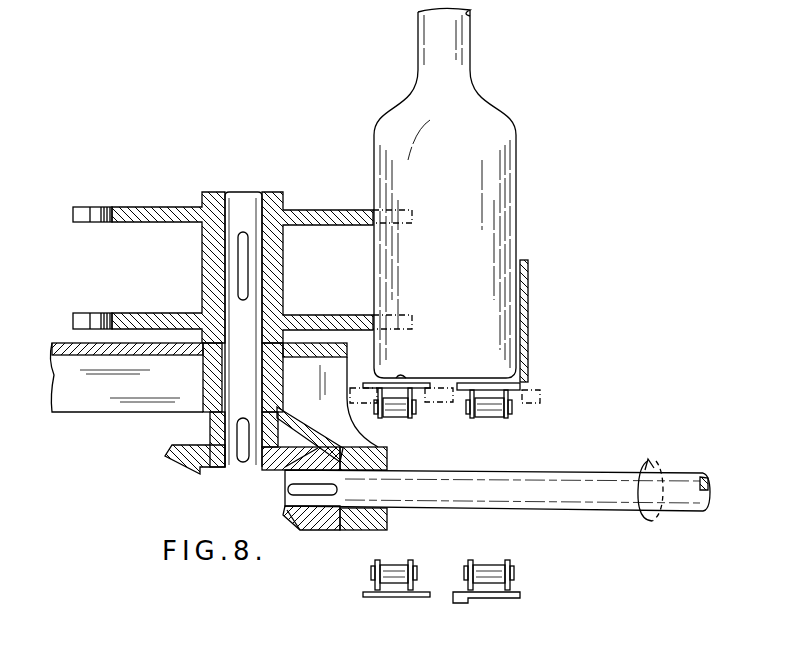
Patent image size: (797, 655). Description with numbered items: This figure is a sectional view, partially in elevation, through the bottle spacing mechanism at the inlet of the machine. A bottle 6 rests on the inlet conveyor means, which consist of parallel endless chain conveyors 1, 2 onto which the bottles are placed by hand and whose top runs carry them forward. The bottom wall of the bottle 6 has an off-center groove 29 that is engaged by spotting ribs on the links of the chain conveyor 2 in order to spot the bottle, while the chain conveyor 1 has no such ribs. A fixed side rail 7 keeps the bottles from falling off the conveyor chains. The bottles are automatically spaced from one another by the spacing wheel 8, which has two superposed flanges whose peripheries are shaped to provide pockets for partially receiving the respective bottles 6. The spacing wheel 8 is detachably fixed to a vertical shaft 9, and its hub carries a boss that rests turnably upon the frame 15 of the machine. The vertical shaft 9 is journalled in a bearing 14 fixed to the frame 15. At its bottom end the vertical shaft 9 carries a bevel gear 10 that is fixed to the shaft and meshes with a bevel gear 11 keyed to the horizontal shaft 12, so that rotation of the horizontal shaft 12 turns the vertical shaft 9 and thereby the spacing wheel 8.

The endless chain conveyor 1 is at (410, 420).
The endless chain conveyor 2 is at (507, 420).
The bottle 6 is at (375, 124).
The side rail 7 is at (528, 318).
The spacing wheel 8 is at (183, 206).
The vertical shaft 9 is at (250, 193).
The bevel gear 10 is at (185, 463).
The bevel gear 11 is at (310, 530).
The horizontal shaft 12 is at (511, 471).
The bearing 14 is at (220, 378).
The frame 15 is at (283, 381).
The groove 29 is at (457, 601).